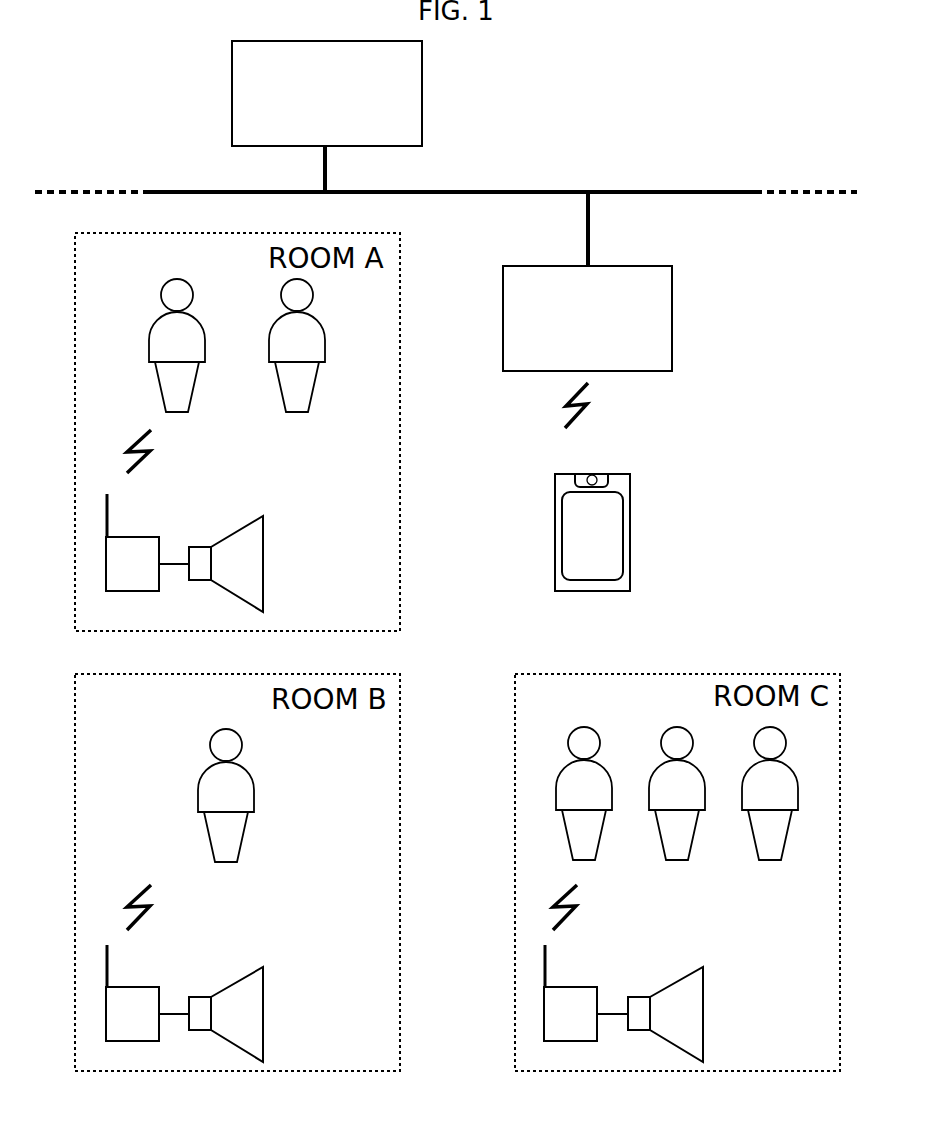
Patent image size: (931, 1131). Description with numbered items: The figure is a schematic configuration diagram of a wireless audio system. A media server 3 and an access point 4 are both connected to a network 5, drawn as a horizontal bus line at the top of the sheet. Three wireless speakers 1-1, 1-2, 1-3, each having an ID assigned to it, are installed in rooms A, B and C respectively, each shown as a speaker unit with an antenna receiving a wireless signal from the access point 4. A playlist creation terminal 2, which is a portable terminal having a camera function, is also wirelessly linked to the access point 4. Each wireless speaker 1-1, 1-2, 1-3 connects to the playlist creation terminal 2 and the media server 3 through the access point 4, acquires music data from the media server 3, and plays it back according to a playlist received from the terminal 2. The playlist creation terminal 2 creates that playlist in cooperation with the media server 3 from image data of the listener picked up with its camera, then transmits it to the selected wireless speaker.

The wireless speaker 1-1 is at (133, 537).
The wireless speaker 1-2 is at (133, 987).
The wireless speaker 1-3 is at (571, 987).
The playlist creation terminal 2 is at (618, 474).
The media server 3 is at (356, 41).
The access point 4 is at (627, 266).
The network 5 is at (688, 191).